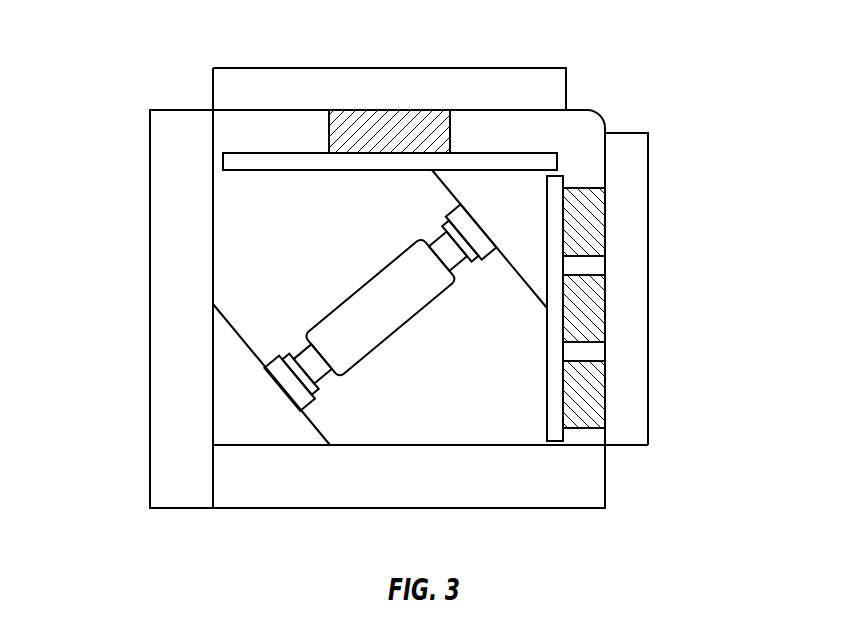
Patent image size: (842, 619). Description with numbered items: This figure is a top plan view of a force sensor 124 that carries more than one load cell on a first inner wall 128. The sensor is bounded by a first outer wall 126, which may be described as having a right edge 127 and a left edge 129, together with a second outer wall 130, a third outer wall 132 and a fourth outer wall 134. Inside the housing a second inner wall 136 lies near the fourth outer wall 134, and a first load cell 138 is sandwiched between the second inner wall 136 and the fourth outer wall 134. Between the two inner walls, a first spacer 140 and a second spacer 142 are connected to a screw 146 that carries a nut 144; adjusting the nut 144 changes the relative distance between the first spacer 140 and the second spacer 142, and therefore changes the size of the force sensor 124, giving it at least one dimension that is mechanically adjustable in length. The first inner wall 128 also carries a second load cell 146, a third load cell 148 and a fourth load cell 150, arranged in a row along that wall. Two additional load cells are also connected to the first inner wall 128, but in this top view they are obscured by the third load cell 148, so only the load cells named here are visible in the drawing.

The force sensor 124 is at (135, 46).
The first outer wall 126 is at (648, 355).
The right edge 127 is at (648, 133).
The first inner wall 128 is at (547, 398).
The left edge 129 is at (647, 446).
The second outer wall 130 is at (315, 508).
The third outer wall 132 is at (149, 413).
The fourth outer wall 134 is at (302, 68).
The second inner wall 136 is at (318, 170).
The first load cell 138 is at (329, 150).
The first spacer 140 is at (534, 216).
The second spacer 142 is at (270, 425).
The nut 144 is at (357, 287).
The screw 146 is at (585, 222).
The third load cell 148 is at (585, 310).
The fourth load cell 150 is at (585, 400).